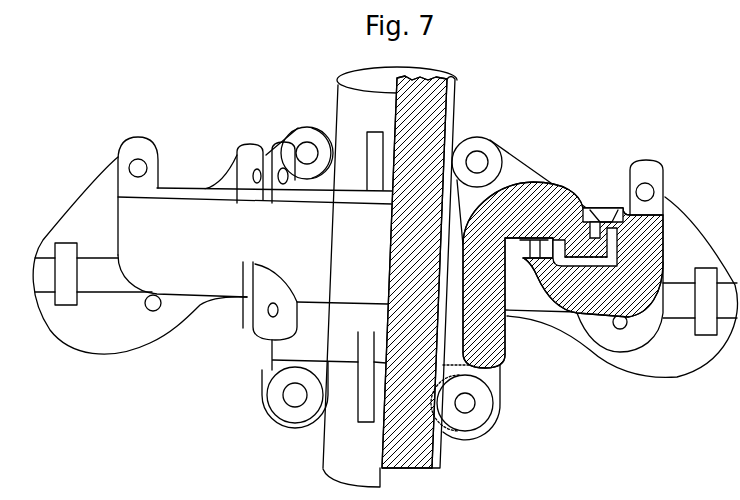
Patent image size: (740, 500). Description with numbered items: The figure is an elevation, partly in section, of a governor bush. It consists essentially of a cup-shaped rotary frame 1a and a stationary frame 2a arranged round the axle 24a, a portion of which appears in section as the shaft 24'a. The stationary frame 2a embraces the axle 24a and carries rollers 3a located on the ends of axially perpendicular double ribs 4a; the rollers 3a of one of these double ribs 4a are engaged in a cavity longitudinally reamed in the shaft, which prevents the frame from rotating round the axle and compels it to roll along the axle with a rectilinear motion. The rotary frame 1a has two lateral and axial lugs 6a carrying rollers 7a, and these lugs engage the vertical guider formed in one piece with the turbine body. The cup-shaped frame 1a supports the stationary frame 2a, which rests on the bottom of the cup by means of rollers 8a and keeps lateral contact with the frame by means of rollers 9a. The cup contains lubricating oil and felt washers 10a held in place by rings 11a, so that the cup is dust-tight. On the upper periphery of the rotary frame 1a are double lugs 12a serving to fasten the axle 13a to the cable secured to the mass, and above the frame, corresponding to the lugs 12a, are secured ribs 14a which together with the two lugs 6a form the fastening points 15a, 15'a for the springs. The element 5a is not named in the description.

The rotary frame 1a is at (653, 234).
The stationary frame 2a is at (566, 200).
The rollers 3a is at (296, 127).
The double ribs 4a is at (310, 137).
The sleeve strip 5a is at (453, 93).
The lateral and axial lugs 6a is at (673, 362).
The rollers 7a is at (386, 289).
The rollers 8a is at (590, 287).
The rollers 9a is at (603, 310).
The felt washers 10a is at (624, 207).
The rings 11a is at (532, 238).
The double lugs 12a is at (133, 143).
The axle 13a is at (144, 167).
The ribs 14a is at (270, 328).
The fastening points 15a is at (268, 312).
The fastening points 15'a is at (386, 348).
The axle 24a is at (350, 83).
The axle 24'a is at (436, 260).